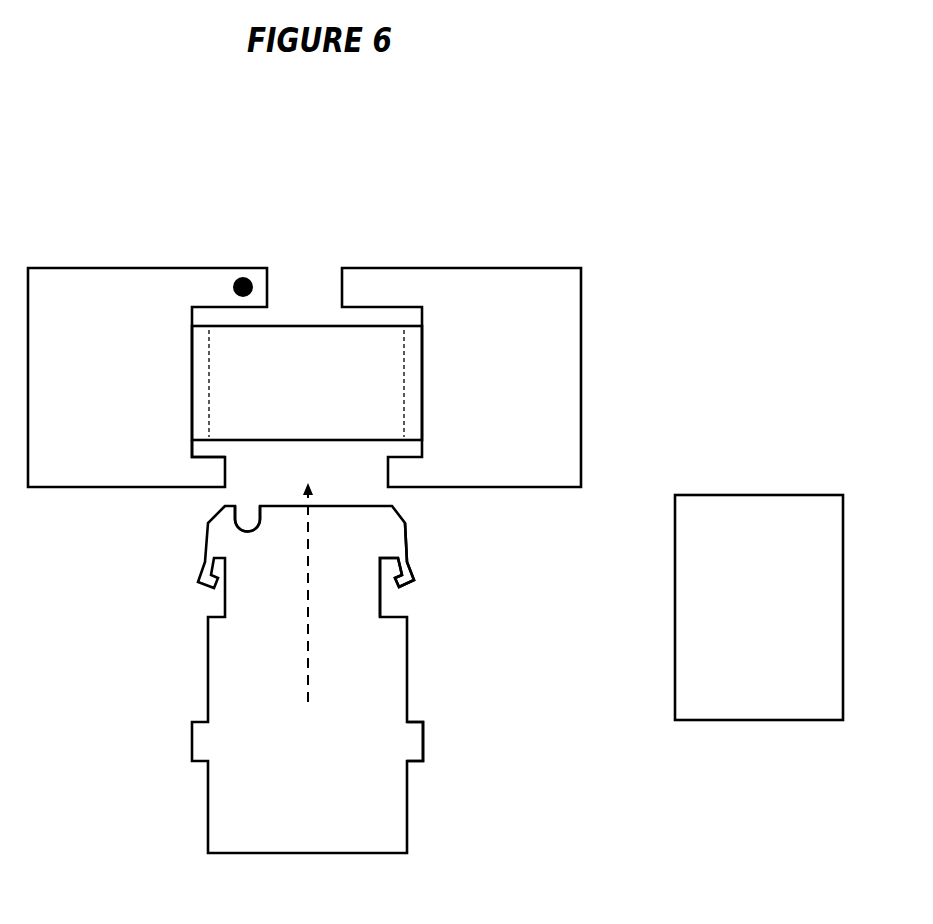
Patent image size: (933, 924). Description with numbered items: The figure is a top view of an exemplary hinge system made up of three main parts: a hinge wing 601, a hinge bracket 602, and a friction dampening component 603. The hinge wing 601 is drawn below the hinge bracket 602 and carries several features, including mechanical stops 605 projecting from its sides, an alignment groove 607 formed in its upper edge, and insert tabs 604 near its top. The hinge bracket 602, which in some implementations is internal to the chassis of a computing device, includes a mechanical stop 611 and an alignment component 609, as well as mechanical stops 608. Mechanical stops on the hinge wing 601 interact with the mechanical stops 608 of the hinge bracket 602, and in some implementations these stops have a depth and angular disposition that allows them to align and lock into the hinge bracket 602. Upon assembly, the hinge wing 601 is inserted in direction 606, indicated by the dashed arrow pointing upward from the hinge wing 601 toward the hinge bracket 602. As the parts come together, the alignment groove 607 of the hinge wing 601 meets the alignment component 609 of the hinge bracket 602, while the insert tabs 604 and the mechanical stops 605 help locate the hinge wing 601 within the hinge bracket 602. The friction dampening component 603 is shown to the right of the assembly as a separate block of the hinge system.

The hinge wing 601 is at (292, 696).
The hinge bracket 602 is at (335, 422).
The friction dampening component 603 is at (843, 567).
The insert tabs 604 is at (420, 578).
The mechanical stops 605 is at (427, 743).
The direction of insertion 606 is at (305, 620).
The alignment groove 607 is at (237, 528).
The mechanical stops 608 is at (195, 461).
The alignment component 609 is at (232, 294).
The mechanical stop 611 is at (424, 330).